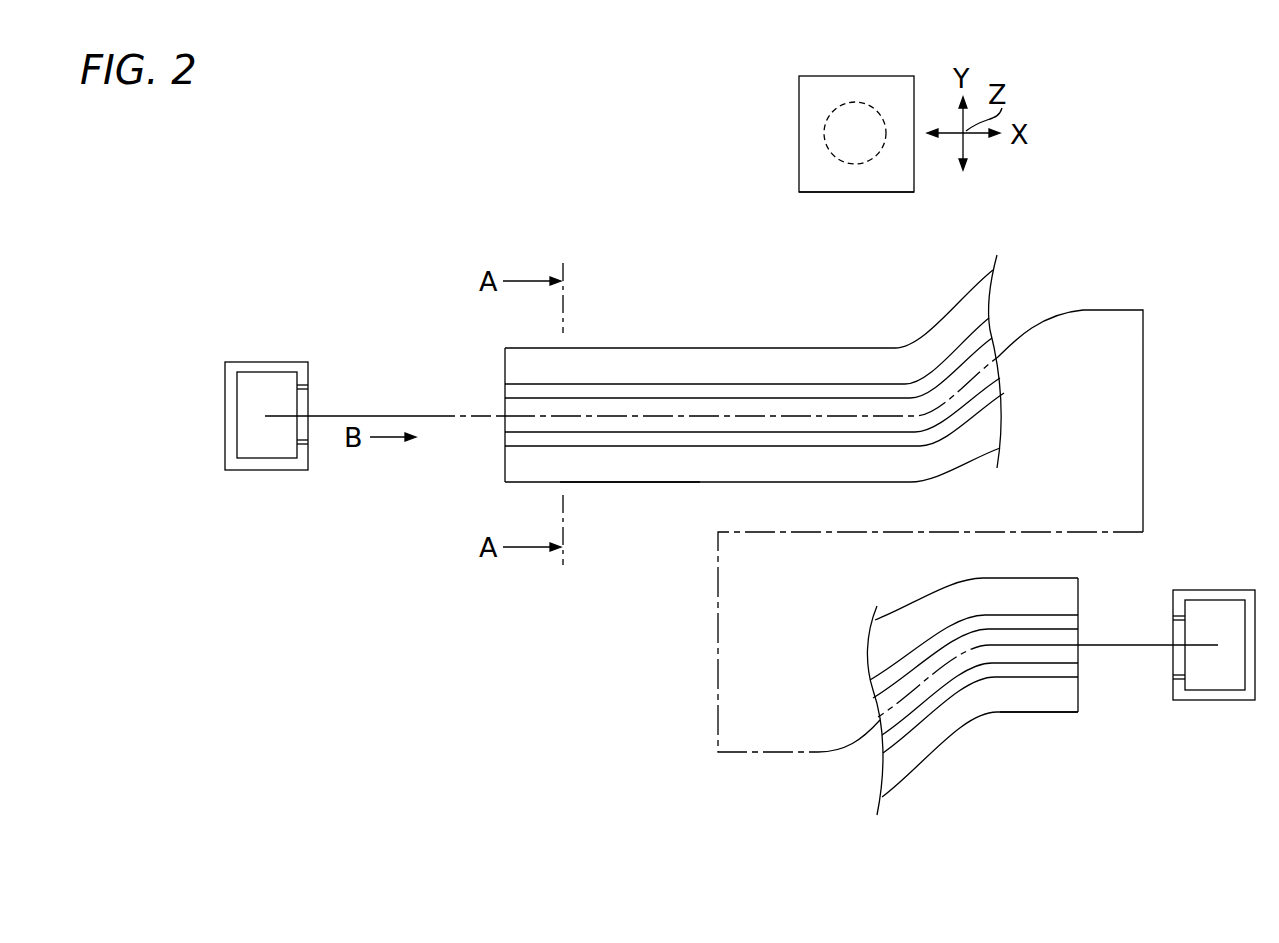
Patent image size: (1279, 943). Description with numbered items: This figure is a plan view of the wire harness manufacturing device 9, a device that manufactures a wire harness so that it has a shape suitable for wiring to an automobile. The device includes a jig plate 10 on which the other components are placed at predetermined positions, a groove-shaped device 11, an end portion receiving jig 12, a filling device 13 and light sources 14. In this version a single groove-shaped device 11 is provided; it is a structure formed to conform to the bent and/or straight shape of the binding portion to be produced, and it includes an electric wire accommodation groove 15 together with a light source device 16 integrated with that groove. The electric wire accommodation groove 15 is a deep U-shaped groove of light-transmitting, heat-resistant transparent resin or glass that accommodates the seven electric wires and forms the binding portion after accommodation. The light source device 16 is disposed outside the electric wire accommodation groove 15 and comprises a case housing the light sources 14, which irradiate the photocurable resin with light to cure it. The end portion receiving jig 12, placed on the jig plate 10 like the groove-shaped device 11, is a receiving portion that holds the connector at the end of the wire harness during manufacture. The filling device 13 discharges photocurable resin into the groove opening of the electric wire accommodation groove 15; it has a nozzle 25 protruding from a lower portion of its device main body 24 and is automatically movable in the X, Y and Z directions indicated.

The wire harness manufacturing device 9 is at (406, 146).
The jig plate 10 is at (297, 224).
The groove-shaped device 11 is at (728, 345).
The end portion receiving jig 12 is at (268, 365).
The filling device 13 is at (807, 180).
The light source 14 is at (623, 468).
The electric wire accommodation groove 15 is at (513, 398).
The light source device 16 is at (512, 463).
The device main body 24 is at (815, 183).
The nozzle 25 is at (873, 161).